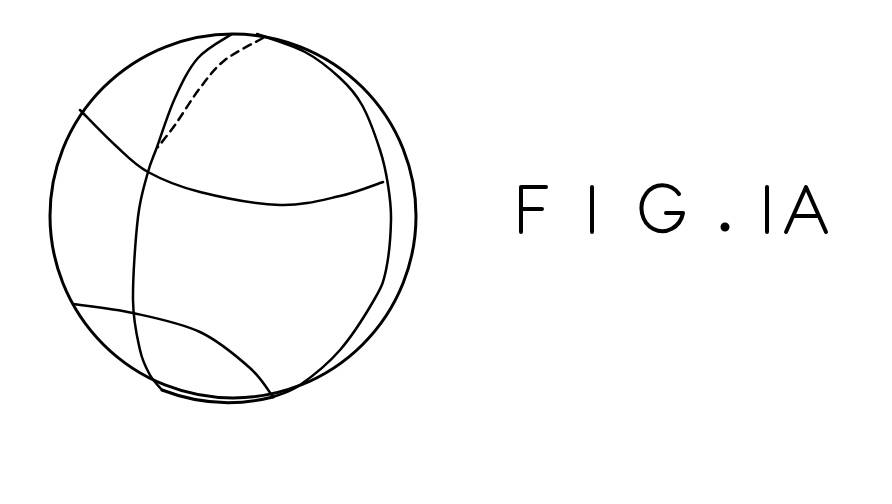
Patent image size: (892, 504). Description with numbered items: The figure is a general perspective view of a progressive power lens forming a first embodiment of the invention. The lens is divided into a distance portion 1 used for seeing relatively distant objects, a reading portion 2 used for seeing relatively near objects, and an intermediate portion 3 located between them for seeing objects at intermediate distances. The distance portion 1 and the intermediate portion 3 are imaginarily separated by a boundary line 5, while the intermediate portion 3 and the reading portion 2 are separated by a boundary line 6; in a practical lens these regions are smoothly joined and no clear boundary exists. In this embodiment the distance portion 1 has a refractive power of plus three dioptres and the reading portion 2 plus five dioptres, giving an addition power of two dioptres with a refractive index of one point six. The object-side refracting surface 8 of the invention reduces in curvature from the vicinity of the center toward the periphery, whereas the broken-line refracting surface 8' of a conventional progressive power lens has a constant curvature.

The distance portion 1 is at (322, 106).
The reading portion 2 is at (223, 388).
The intermediate portion 3 is at (352, 290).
The boundary line 5 is at (127, 162).
The boundary line 6 is at (100, 305).
The refracting surface on the object side 8 is at (181, 212).
The refracting surface of a conventional progressive power lens 8' is at (210, 92).